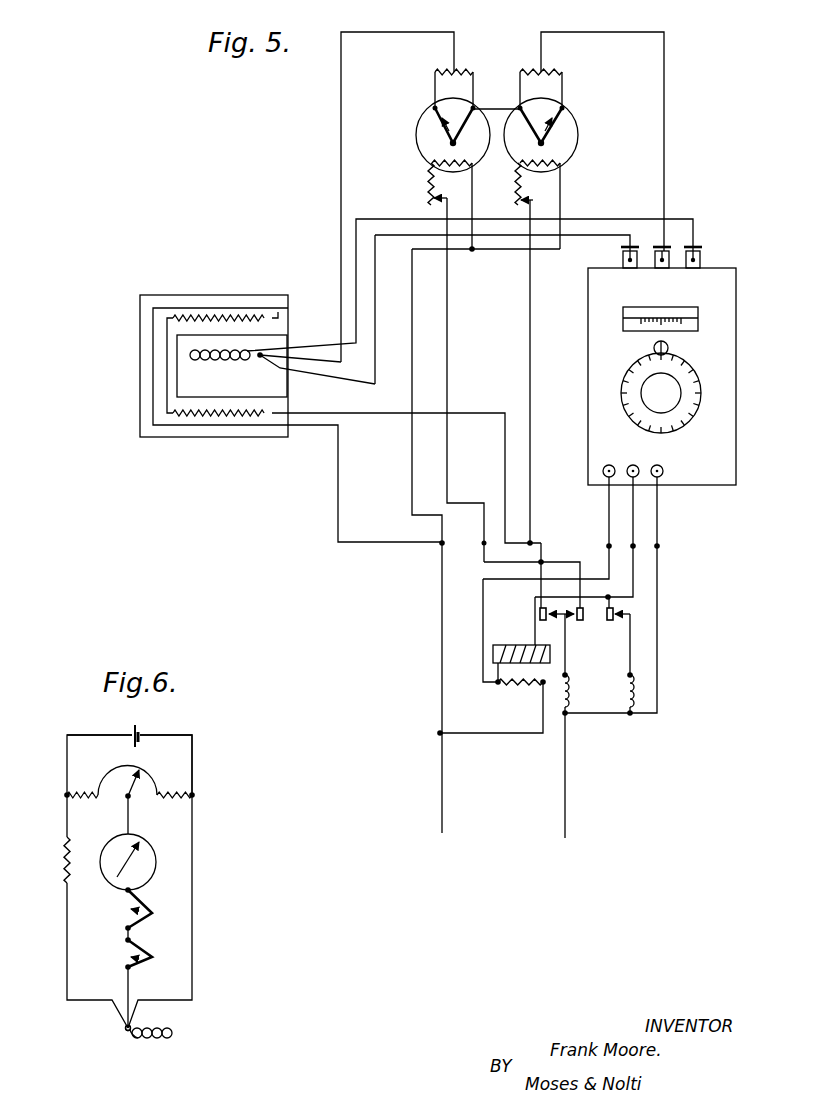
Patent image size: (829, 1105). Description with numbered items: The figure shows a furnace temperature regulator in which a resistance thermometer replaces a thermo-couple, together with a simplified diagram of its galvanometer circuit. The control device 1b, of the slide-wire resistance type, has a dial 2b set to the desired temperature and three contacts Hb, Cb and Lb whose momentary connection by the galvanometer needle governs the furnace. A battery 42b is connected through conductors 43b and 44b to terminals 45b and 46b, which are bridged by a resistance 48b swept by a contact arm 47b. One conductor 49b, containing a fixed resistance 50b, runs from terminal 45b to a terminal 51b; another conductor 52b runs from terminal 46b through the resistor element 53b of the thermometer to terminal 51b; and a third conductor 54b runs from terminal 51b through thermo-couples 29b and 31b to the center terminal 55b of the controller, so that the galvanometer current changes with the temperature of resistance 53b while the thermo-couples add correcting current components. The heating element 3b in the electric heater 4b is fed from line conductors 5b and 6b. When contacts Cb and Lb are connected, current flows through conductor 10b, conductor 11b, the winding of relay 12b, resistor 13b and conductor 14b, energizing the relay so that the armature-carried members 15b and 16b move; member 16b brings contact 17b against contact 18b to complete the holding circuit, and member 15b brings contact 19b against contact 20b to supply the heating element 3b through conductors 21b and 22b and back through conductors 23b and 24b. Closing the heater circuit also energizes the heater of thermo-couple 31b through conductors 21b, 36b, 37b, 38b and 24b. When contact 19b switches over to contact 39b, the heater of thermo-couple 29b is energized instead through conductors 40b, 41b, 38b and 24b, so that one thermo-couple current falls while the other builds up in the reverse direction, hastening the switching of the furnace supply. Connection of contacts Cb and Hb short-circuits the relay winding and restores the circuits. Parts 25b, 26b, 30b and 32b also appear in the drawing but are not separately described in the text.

In FIG. 5, the control device 1b is at (684, 376).
In FIG. 5, the dial 2b is at (686, 425).
In FIG. 5, the heating element 3b is at (152, 383).
In FIG. 5, the electric heater 4b is at (137, 358).
In FIG. 5, the line conductor 5b is at (566, 793).
In FIG. 5, the line conductor 6b is at (440, 786).
In FIG. 5, the conductor 10b is at (658, 622).
In FIG. 5, the conductor 11b is at (535, 605).
In FIG. 5, the relay 12b is at (492, 656).
In FIG. 5, the resistor 13b is at (523, 686).
In FIG. 5, the conductor 14b is at (490, 735).
In FIG. 5, the armature-carried member 15b is at (567, 668).
In FIG. 5, the armature-carried member 16b is at (632, 664).
In FIG. 5, the contact 17b is at (620, 606).
In FIG. 5, the contact 18b is at (612, 621).
In FIG. 5, the contact 19b is at (567, 610).
In FIG. 5, the contact 20b is at (542, 615).
In FIG. 5, the conductor 21b is at (541, 553).
In FIG. 5, the conductor 22b is at (472, 414).
In FIG. 5, the conductor 23b is at (386, 545).
In FIG. 5, the conductor 24b is at (440, 655).
In FIG. 5, the conductor 25b is at (632, 523).
In FIG. 5, the conductor 26b is at (608, 515).
In FIG. 5, the thermo-couple 29b is at (431, 122).
In FIG. 6, the thermo-couple 29b is at (148, 947).
In FIG. 5, the heating resistor 30b is at (447, 70).
In FIG. 5, the thermo-couple 31b is at (563, 128).
In FIG. 6, the thermo-couple 31b is at (148, 922).
In FIG. 5, the heating resistor 32b is at (556, 70).
In FIG. 5, the conductor 36b is at (533, 347).
In FIG. 5, the conductor 37b is at (494, 253).
In FIG. 5, the conductor 38b is at (410, 458).
In FIG. 5, the contact 39b is at (580, 621).
In FIG. 5, the conductor 40b is at (493, 562).
In FIG. 5, the conductor 41b is at (472, 197).
In FIG. 6, the battery 42b is at (143, 730).
In FIG. 6, the conductor 43b is at (83, 733).
In FIG. 6, the conductor 44b is at (193, 760).
In FIG. 5, the terminal 45b is at (622, 248).
In FIG. 6, the terminal 45b is at (69, 798).
In FIG. 5, the terminal 46b is at (701, 248).
In FIG. 6, the terminal 46b is at (193, 795).
In FIG. 6, the contact arm 47b is at (134, 790).
In FIG. 6, the resistance 48b is at (103, 782).
In FIG. 5, the conductor 49b is at (376, 368).
In FIG. 6, the conductor 49b is at (67, 947).
In FIG. 6, the fixed resistance 50b is at (65, 856).
In FIG. 5, the terminal 51b is at (259, 358).
In FIG. 6, the terminal 51b is at (125, 1033).
In FIG. 5, the conductor 52b is at (382, 215).
In FIG. 6, the conductor 52b is at (193, 922).
In FIG. 5, the resistor element 53b is at (212, 348).
In FIG. 6, the resistor element 53b is at (156, 1038).
In FIG. 5, the conductor 54b is at (341, 148).
In FIG. 6, the conductor 54b is at (128, 892).
In FIG. 5, the center terminal 55b is at (665, 242).
In FIG. 6, the center terminal 55b is at (138, 901).
In FIG. 5, the contact Hb is at (610, 460).
In FIG. 5, the contact Cb is at (634, 460).
In FIG. 5, the contact Lb is at (658, 460).